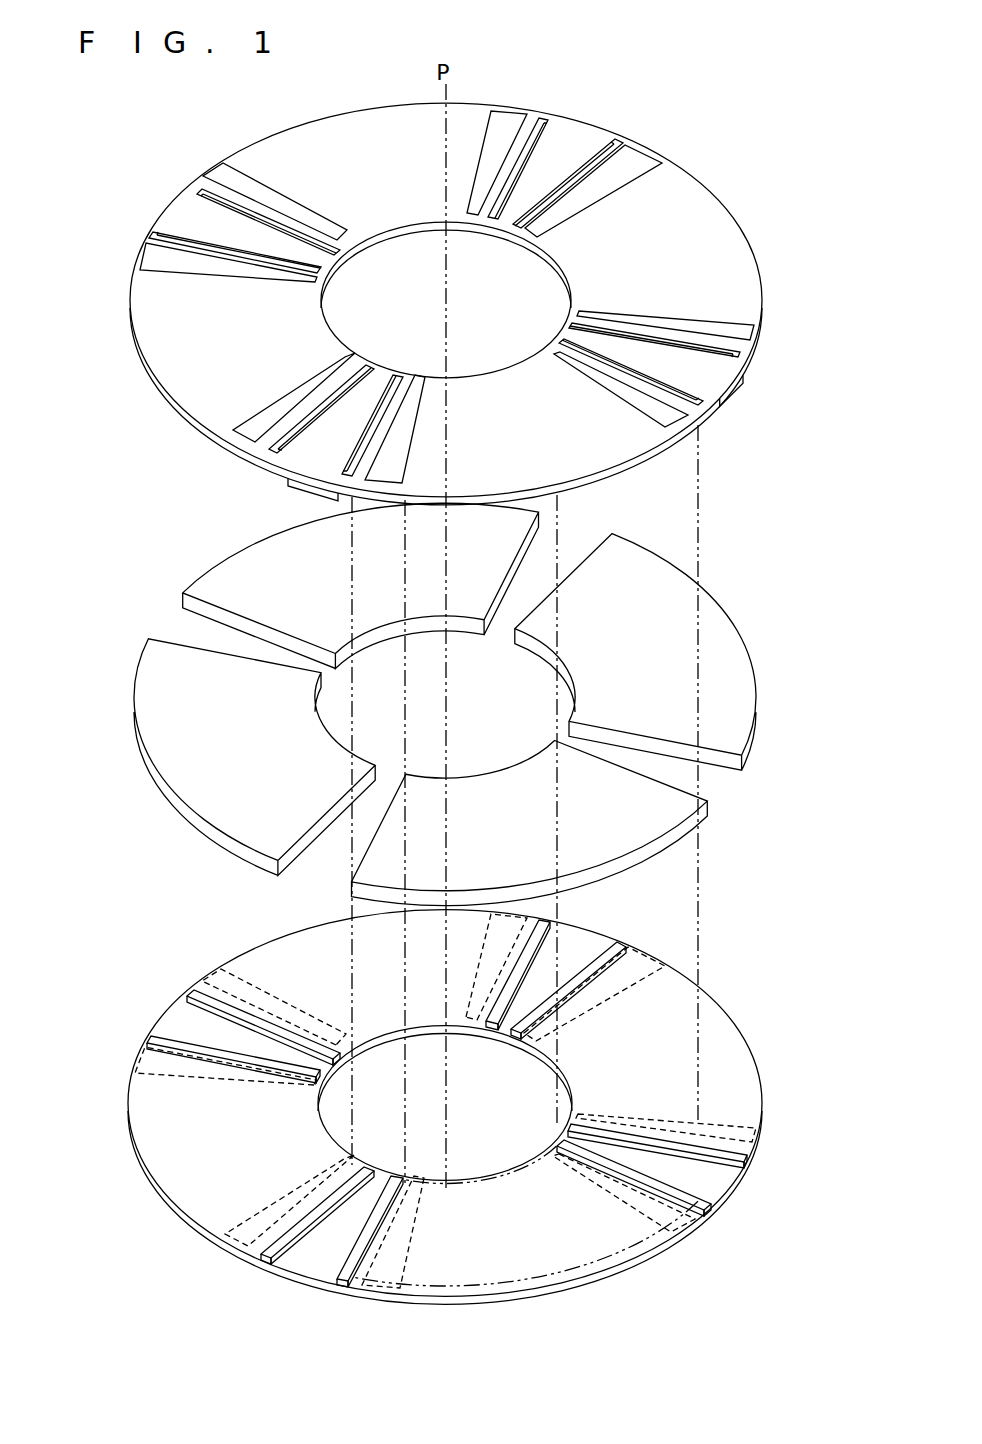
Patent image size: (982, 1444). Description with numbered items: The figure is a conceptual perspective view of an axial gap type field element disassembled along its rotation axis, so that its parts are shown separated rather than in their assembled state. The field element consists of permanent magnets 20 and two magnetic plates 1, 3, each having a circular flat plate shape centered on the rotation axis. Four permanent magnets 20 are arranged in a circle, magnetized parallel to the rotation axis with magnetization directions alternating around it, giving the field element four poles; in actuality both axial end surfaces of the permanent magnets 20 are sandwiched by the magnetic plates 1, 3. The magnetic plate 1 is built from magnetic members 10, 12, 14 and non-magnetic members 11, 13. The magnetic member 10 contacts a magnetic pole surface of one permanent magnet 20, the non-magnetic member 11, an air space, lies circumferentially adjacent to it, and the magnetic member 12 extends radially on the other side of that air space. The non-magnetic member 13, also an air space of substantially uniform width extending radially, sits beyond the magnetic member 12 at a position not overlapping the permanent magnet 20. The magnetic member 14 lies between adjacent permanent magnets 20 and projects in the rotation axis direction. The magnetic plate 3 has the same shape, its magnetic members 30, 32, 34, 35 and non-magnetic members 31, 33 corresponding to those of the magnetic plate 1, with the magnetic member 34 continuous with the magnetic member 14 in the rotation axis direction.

The magnetic plate 1 is at (147, 1205).
The magnetic plate 3 is at (132, 373).
The magnetic member 10 is at (558, 1266).
The non-magnetic member 11 is at (687, 1232).
The magnetic member 12 is at (705, 1217).
The non-magnetic member 13 is at (717, 1210).
The magnetic member 14 is at (713, 1176).
The permanent magnet 20 is at (250, 562).
The magnetic member 30 is at (745, 272).
The non-magnetic member 31 is at (676, 322).
The magnetic member 32 is at (738, 348).
The non-magnetic member 33 is at (747, 358).
The magnetic member 34 is at (738, 380).
The magnetic member 35 is at (752, 329).